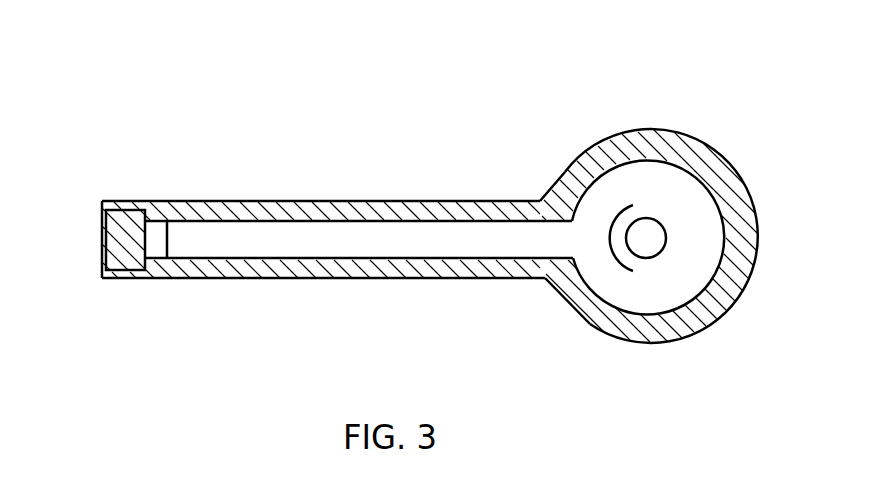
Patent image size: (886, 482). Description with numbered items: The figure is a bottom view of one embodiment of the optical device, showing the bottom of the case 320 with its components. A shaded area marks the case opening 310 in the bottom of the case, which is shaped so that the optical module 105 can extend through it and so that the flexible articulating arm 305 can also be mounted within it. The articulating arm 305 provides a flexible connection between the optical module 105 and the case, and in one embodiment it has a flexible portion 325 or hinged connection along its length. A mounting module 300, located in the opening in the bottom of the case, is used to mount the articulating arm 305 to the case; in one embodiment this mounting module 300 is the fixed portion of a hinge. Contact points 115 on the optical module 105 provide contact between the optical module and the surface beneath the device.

The mounting module 300 is at (102, 227).
The flexible articulating arm 305 is at (283, 219).
The case opening 310 is at (660, 143).
The bottom of case 320 is at (555, 183).
The flexible portion 325 is at (147, 221).
The optical module 105 is at (667, 240).
The contact points 115 is at (617, 210).